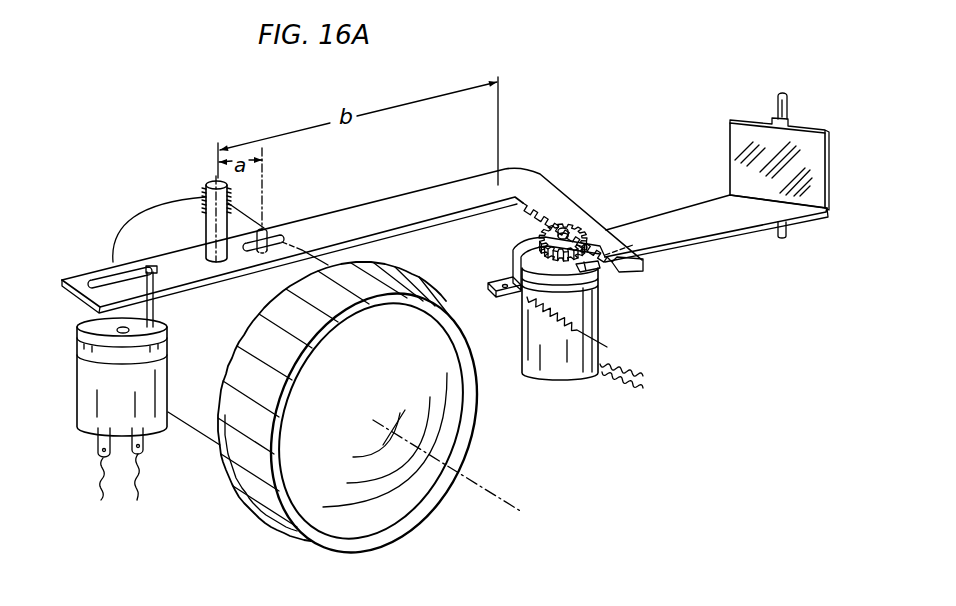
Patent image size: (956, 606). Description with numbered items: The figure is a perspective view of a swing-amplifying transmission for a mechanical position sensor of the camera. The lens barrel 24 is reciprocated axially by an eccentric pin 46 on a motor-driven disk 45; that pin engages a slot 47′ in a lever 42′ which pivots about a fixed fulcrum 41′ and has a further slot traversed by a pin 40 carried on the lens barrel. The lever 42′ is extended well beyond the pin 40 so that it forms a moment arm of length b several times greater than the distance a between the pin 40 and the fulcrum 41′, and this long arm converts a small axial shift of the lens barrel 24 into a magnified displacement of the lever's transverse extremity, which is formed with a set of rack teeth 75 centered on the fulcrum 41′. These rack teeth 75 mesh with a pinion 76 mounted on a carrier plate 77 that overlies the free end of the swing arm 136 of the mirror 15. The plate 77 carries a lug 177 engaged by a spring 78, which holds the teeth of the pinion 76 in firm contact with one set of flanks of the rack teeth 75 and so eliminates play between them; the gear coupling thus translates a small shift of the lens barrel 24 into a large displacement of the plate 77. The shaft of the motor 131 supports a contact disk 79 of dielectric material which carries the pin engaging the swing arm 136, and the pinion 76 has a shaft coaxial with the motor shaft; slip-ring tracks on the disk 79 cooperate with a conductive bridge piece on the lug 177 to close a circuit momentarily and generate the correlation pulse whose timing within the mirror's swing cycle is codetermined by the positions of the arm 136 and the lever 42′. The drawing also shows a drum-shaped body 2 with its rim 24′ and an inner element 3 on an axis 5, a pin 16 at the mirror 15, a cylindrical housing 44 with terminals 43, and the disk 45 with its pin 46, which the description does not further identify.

The lens drum 2 is at (400, 535).
The lens 3 is at (337, 497).
The optical axis 5 is at (492, 492).
The mirror 15 is at (743, 167).
The mirror pivot pin 16 is at (788, 105).
The lens barrel 24 is at (162, 217).
The drum rim 24′ is at (263, 497).
The pin 40 is at (266, 228).
The fixed fulcrum 41′ is at (203, 197).
The lever 42′ is at (382, 207).
The terminals 43 is at (119, 432).
The switch housing 44 is at (123, 333).
The motor-driven disk 45 is at (172, 338).
The eccentric pin 46 is at (152, 311).
The slot 47′ is at (102, 283).
The rack teeth 75 is at (547, 203).
The pinion 76 is at (570, 227).
The carrier plate 77 is at (535, 243).
The spring 78 is at (533, 313).
The contact disk 79 is at (603, 270).
The motor 131 is at (570, 365).
The swing arm 136 is at (672, 220).
The lug 177 is at (493, 290).